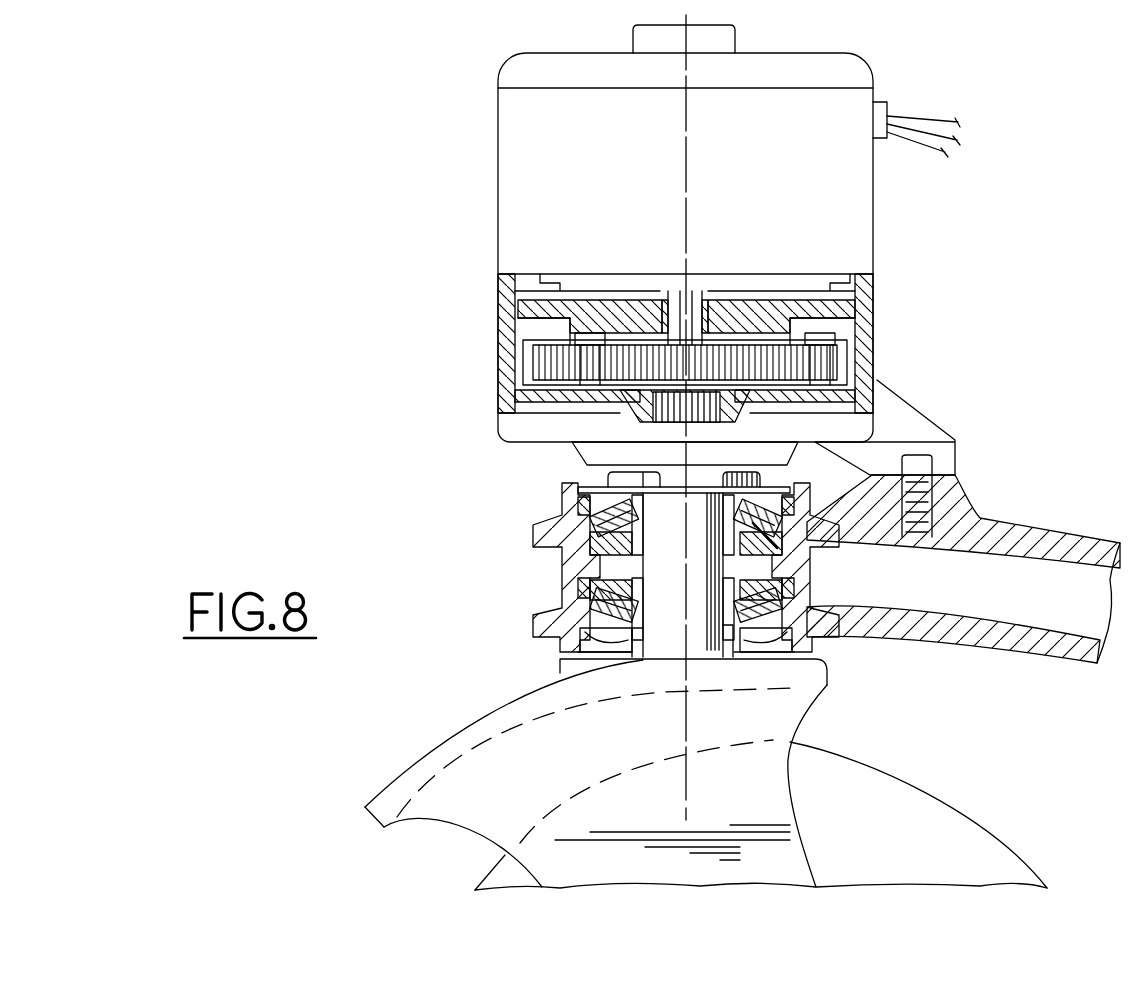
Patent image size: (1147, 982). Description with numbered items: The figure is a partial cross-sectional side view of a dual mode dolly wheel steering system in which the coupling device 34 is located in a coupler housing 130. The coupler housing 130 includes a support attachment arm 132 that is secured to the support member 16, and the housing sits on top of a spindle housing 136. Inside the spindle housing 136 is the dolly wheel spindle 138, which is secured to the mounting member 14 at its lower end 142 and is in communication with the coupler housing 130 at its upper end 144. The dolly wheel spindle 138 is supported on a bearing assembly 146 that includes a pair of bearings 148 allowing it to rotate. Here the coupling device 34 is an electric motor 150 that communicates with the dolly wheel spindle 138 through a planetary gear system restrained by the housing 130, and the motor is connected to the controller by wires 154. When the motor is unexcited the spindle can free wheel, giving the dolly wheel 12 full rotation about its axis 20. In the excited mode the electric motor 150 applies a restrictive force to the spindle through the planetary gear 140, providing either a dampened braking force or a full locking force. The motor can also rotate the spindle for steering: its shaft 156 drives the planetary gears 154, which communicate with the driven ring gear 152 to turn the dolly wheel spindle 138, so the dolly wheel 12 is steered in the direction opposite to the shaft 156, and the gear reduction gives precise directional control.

The axis 20 is at (690, 48).
The coupler housing 130 is at (510, 113).
The electric motor 150 is at (530, 173).
The wires 154 is at (912, 128).
The coupling device 34 is at (878, 232).
The shaft 156 is at (695, 300).
The planetary gear 140 is at (825, 366).
The driven ring gear 152 is at (843, 378).
The support attachment arm 132 is at (948, 446).
The support member 16 is at (1075, 575).
The upper end 144 is at (662, 478).
The spindle housing 136 is at (555, 593).
The bearings 148 is at (762, 533).
The dolly wheel spindle 138 is at (657, 548).
The bearing assembly 146 is at (633, 571).
The lower end 142 is at (648, 640).
The mounting member 14 is at (507, 702).
The dolly wheel 12 is at (907, 790).